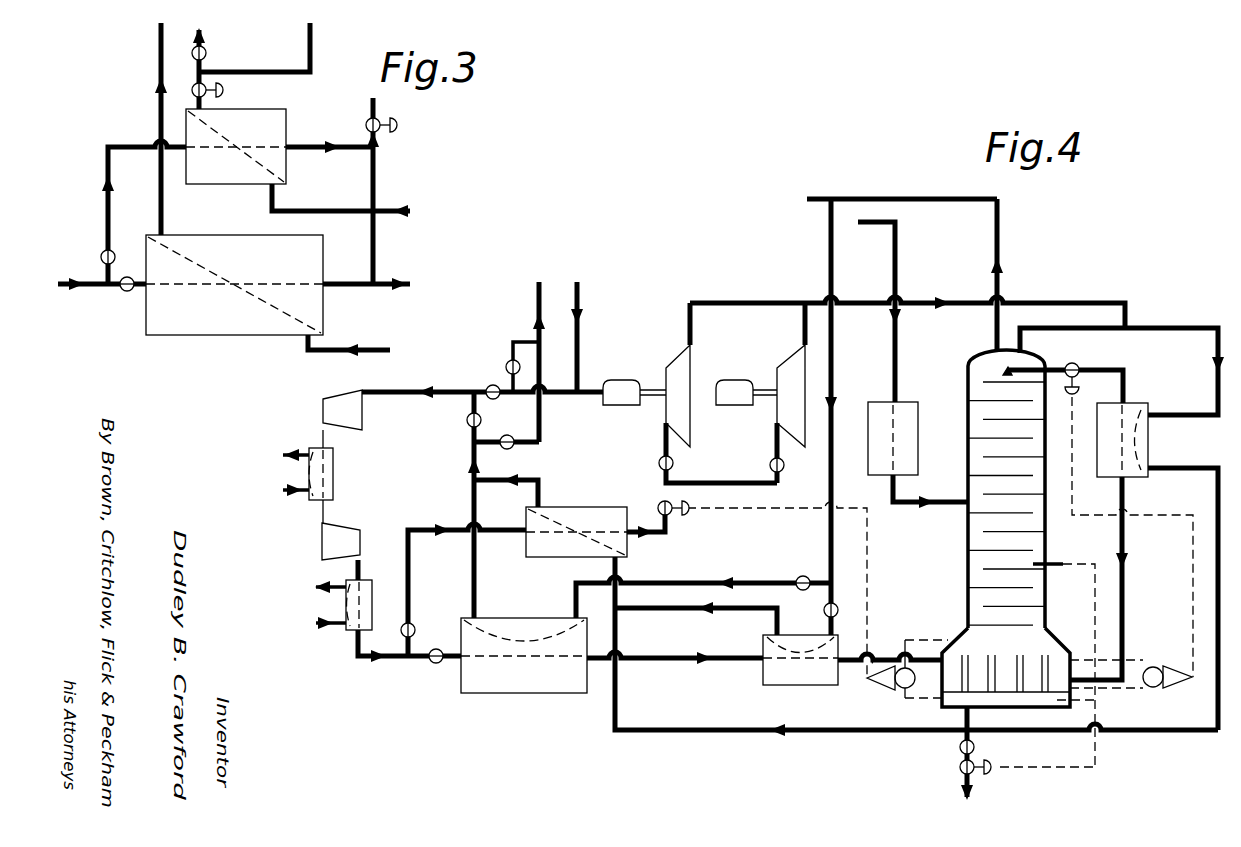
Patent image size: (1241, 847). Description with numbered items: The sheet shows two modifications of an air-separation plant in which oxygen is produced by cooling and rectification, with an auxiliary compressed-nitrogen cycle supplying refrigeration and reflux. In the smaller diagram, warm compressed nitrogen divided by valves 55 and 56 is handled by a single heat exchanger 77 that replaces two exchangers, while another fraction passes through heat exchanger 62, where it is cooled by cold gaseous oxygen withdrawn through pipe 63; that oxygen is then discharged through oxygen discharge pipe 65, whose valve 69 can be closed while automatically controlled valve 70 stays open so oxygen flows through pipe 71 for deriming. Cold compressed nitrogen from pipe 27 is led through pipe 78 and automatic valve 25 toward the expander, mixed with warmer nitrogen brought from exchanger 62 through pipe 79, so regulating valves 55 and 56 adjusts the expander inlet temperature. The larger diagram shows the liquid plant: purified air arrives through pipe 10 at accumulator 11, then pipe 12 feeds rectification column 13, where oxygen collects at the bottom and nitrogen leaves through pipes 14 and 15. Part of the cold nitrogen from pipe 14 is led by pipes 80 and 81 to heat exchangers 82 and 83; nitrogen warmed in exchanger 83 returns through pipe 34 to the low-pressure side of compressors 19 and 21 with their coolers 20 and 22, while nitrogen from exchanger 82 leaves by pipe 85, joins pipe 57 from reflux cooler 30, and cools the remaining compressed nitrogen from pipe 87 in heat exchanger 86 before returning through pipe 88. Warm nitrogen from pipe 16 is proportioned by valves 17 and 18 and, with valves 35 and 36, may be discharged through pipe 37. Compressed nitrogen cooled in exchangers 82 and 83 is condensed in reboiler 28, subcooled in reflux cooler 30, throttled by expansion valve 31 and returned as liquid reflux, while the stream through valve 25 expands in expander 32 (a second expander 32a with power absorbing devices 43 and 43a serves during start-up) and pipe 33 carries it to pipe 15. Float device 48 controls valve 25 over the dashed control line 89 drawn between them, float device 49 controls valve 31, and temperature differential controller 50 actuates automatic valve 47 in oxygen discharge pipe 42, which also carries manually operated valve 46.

In FIG. 4, the pipe 10 is at (898, 264).
In FIG. 4, the accumulator 11 is at (910, 426).
In FIG. 4, the pipe 12 is at (904, 506).
In FIG. 4, the rectification column 13 is at (967, 552).
In FIG. 4, the pipe 14 is at (1000, 240).
In FIG. 4, the pipe 15 is at (1140, 326).
In FIG. 4, the pipe 16 is at (581, 300).
In FIG. 4, the valve 17 is at (506, 364).
In FIG. 4, the valve 18 is at (500, 398).
In FIG. 4, the compressor 19 is at (321, 406).
In FIG. 4, the cooler 20 is at (337, 476).
In FIG. 4, the compressor 21 is at (321, 546).
In FIG. 4, the after-cooler 22 is at (373, 596).
In FIG. 3, the automatic valve 25 is at (366, 122).
In FIG. 4, the automatic valve 25 is at (658, 505).
In FIG. 3, the pipe 27 is at (380, 290).
In FIG. 4, the reboiler 28 is at (1006, 676).
In FIG. 4, the reflux cooler 30 is at (1100, 470).
In FIG. 4, the expansion valve 31 is at (1080, 365).
In FIG. 4, the expander 32 is at (790, 436).
In FIG. 4, the expander 32a is at (690, 434).
In FIG. 4, the pipe 33 is at (817, 298).
In FIG. 3, the pipe 34 is at (158, 100).
In FIG. 4, the pipe 34 is at (470, 480).
In FIG. 4, the valve 35 is at (467, 420).
In FIG. 4, the valve 36 is at (514, 447).
In FIG. 4, the pipe 37 is at (535, 306).
In FIG. 4, the oxygen discharge pipe 42 is at (965, 720).
In FIG. 4, the power absorbing device 43 is at (735, 380).
In FIG. 4, the power absorbing device 43a is at (625, 408).
In FIG. 4, the manually operated valve 46 is at (958, 747).
In FIG. 4, the automatic valve 47 is at (975, 776).
In FIG. 4, the float device 48 is at (893, 692).
In FIG. 4, the float device 49 is at (1165, 688).
In FIG. 4, the temperature differential controller 50 is at (1065, 563).
In FIG. 3, the valve 55 is at (127, 292).
In FIG. 4, the valve 55 is at (436, 665).
In FIG. 3, the valve 56 is at (101, 256).
In FIG. 4, the valve 56 is at (415, 628).
In FIG. 3, the pipe 57 is at (306, 342).
In FIG. 4, the pipe 57 is at (1138, 735).
In FIG. 3, the heat exchanger 62 is at (206, 180).
In FIG. 3, the pipe 63 is at (378, 209).
In FIG. 3, the oxygen discharge pipe 65 is at (185, 52).
In FIG. 3, the valve 69 is at (191, 56).
In FIG. 3, the automatically controlled valve 70 is at (191, 88).
In FIG. 3, the pipe 71 is at (308, 42).
In FIG. 3, the heat exchanger 77 is at (206, 328).
In FIG. 3, the pipe 78 is at (372, 246).
In FIG. 3, the pipe 79 is at (318, 150).
In FIG. 4, the pipe 80 is at (835, 380).
In FIG. 4, the pipe 81 is at (755, 582).
In FIG. 4, the heat exchanger 82 is at (770, 680).
In FIG. 4, the heat exchanger 83 is at (520, 694).
In FIG. 4, the pipe 85 is at (676, 612).
In FIG. 4, the heat exchanger 86 is at (548, 560).
In FIG. 4, the pipe 87 is at (412, 568).
In FIG. 4, the pipe 88 is at (544, 484).
In FIG. 4, the control line 89 is at (670, 533).